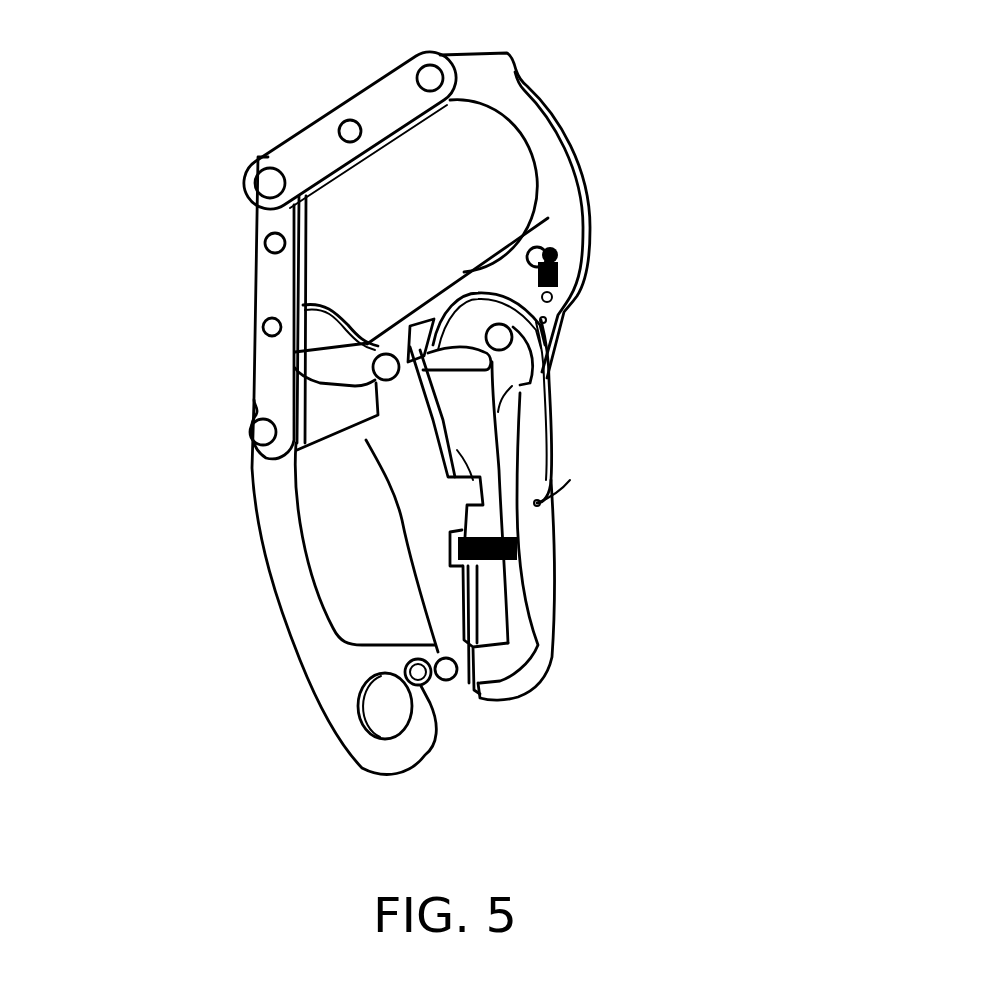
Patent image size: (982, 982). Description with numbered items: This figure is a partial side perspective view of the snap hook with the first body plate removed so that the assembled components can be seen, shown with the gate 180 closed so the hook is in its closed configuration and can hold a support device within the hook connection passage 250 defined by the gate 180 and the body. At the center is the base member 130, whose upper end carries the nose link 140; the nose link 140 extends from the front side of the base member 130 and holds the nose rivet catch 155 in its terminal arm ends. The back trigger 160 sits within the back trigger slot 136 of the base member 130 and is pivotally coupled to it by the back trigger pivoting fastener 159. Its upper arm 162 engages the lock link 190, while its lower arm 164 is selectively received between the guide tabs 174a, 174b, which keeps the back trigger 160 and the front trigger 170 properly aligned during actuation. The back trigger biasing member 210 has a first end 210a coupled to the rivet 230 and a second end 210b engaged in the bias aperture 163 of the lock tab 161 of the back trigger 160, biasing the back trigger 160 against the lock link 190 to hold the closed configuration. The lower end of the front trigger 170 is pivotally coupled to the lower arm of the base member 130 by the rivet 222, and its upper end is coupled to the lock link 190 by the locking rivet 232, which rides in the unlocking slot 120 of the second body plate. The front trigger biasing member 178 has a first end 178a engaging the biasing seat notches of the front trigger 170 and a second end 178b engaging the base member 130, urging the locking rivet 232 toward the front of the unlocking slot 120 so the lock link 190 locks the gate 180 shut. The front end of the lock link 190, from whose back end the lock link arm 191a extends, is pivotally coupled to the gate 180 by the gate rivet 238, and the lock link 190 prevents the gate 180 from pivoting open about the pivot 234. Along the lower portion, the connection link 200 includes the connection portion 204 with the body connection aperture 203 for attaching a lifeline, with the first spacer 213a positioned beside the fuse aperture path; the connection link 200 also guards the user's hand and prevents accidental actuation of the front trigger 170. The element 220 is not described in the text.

The unlocking slot 120 is at (462, 364).
The base member 130 is at (540, 523).
The back trigger slot 136 is at (497, 490).
The nose link 140 is at (407, 100).
The nose rivet catch 155 is at (268, 182).
The back trigger pivoting fastener 159 is at (503, 324).
The back trigger 160 is at (528, 420).
The lock tab 161 is at (545, 328).
The upper arm 162 is at (463, 273).
The bias aperture 163 is at (545, 320).
The lower arm 164 is at (546, 462).
The front trigger 170 is at (393, 463).
The guide tab 174a is at (540, 504).
The guide tab 174b is at (462, 450).
The front trigger biasing member 178 is at (527, 650).
The first end 178a is at (452, 548).
The second end 178b is at (520, 552).
The gate 180 is at (268, 292).
The lock link 190 is at (312, 328).
The lock link arm 191a is at (420, 330).
The connection link 200 is at (295, 598).
The body connection aperture 203 is at (375, 718).
The connection portion 204 is at (335, 683).
The back trigger biasing member 210 is at (557, 280).
The first end 210a is at (557, 245).
The second end 210b is at (577, 300).
The first spacer 213a is at (420, 646).
The roller 220 is at (420, 676).
The rivet 222 is at (522, 695).
The rivet 230 is at (537, 247).
The locking rivet 232 is at (373, 370).
The pivot 234 is at (258, 432).
The gate rivet 238 is at (270, 327).
The hook connection passage 250 is at (488, 147).